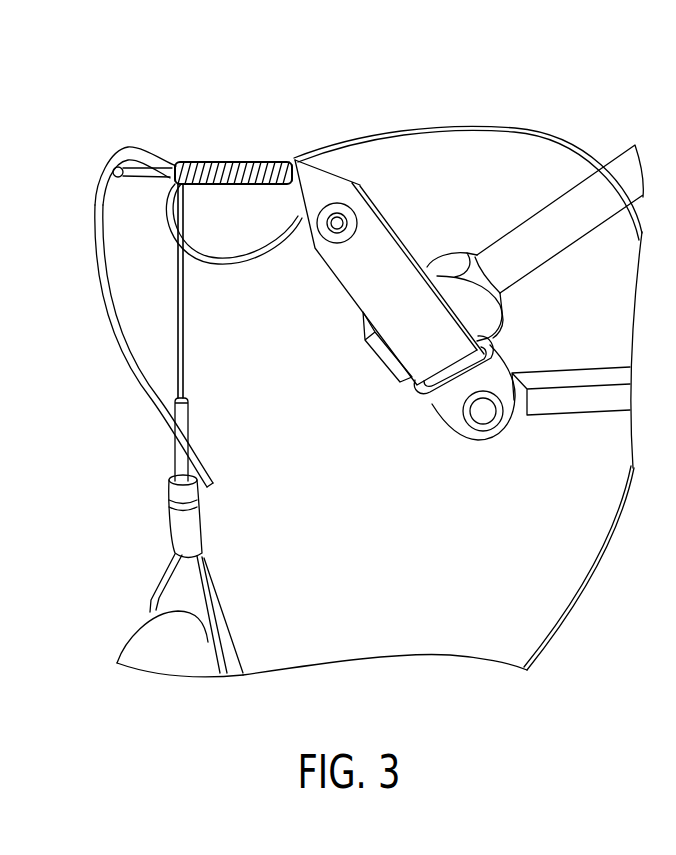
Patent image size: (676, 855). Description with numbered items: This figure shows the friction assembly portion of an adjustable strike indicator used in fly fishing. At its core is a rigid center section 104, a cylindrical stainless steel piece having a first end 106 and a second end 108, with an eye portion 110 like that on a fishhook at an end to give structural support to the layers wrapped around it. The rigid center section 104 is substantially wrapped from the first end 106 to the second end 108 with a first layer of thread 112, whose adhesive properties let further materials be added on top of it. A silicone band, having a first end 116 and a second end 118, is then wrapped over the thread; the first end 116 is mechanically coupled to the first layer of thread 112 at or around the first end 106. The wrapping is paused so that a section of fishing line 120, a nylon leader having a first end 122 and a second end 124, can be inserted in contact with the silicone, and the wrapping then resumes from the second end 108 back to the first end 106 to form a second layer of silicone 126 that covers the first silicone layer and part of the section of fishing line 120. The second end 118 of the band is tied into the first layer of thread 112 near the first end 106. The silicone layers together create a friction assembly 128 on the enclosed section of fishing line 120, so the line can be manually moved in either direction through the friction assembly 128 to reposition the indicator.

The rigid center section 104 is at (148, 188).
The first end 106 is at (122, 188).
The second end 108 is at (290, 152).
The eye portion 110 is at (100, 160).
The first layer of thread 112 is at (200, 357).
The first end 116 is at (177, 152).
The second end 118 is at (210, 488).
The section of fishing line 120 is at (487, 115).
The first end 122 is at (297, 243).
The second end 124 is at (517, 646).
The second layer of silicone 126 is at (238, 152).
The friction assembly 128 is at (210, 197).